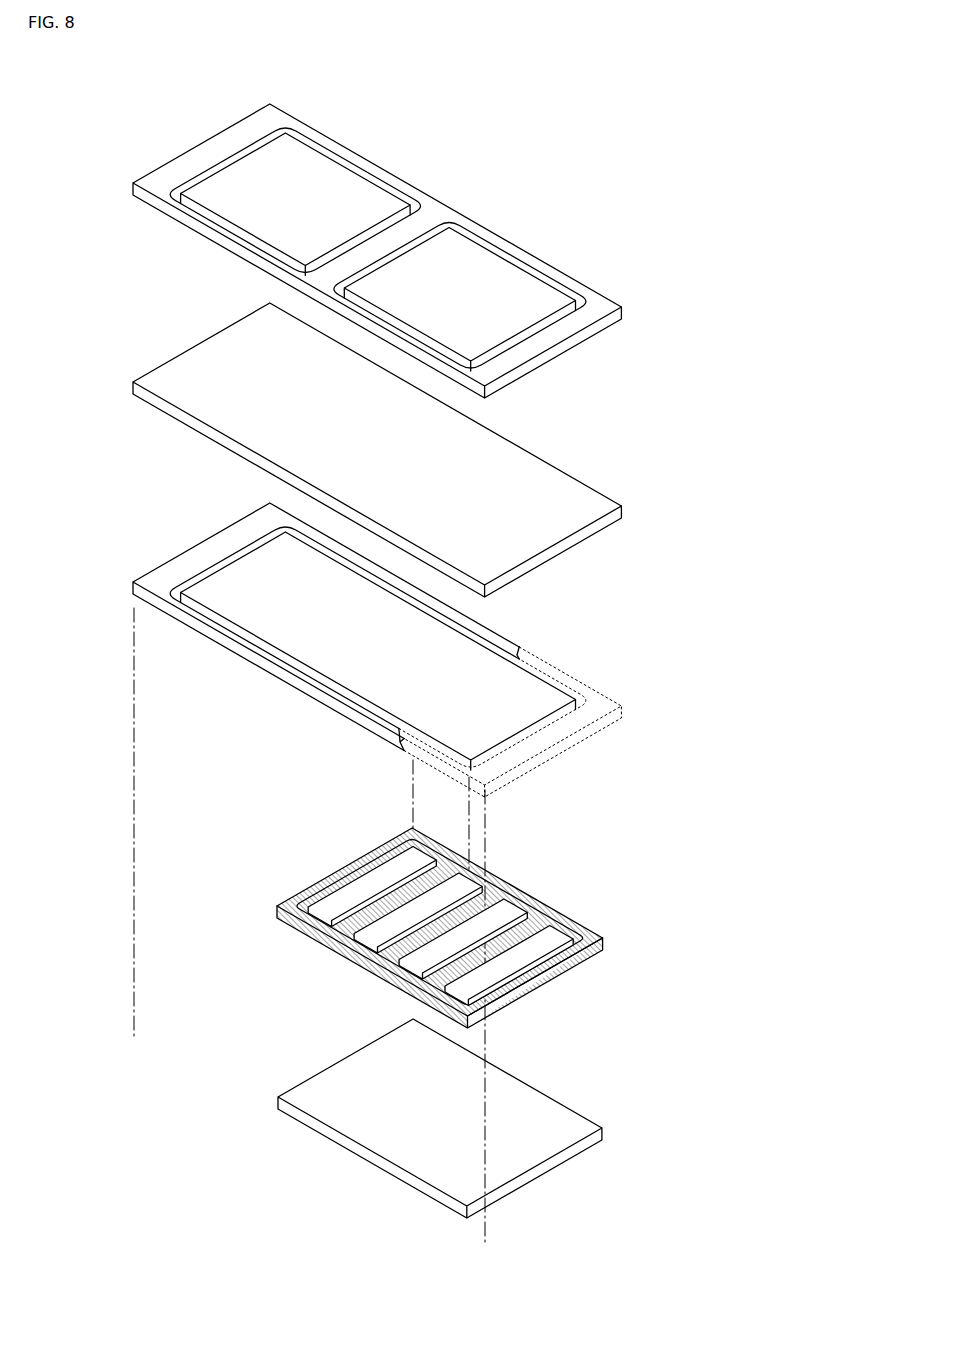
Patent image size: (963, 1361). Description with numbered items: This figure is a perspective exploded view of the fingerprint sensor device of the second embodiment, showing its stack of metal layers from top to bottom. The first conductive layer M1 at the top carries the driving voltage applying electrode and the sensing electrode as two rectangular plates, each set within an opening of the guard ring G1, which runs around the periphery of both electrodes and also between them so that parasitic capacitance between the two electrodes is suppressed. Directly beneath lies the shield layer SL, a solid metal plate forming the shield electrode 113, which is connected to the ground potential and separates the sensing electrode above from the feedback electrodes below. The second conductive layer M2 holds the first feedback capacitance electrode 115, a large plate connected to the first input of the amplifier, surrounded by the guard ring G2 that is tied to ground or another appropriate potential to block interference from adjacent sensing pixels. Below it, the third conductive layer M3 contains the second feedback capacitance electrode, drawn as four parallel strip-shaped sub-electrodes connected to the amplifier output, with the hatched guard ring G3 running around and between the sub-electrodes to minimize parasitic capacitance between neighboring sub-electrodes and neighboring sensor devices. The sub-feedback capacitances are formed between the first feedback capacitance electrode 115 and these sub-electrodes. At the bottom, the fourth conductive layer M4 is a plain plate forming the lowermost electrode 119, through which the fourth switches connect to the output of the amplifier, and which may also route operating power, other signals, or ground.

The first conductive layer M1 is at (100, 191).
The guard ring G1 is at (597, 308).
The shield layer SL is at (100, 391).
The shield electrode 113 is at (547, 498).
The second conductive layer M2 is at (100, 591).
The guard ring G2 is at (174, 570).
The first feedback capacitance electrode 115 is at (498, 700).
The third conductive layer M3 is at (100, 885).
The guard ring G3 is at (586, 946).
The fourth conductive layer M4 is at (100, 1114).
The lowermost electrode 119 is at (525, 1130).